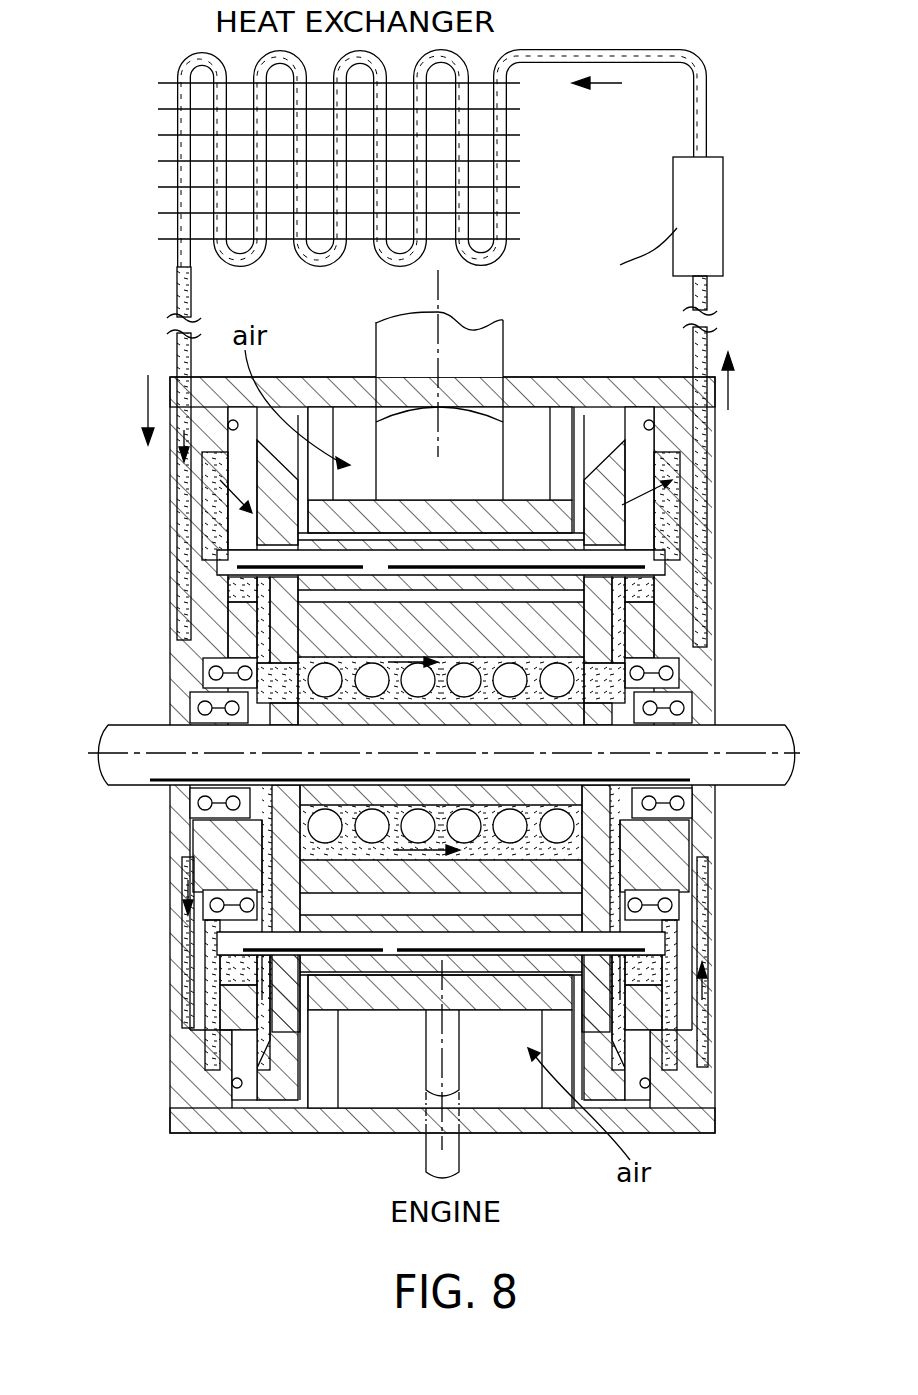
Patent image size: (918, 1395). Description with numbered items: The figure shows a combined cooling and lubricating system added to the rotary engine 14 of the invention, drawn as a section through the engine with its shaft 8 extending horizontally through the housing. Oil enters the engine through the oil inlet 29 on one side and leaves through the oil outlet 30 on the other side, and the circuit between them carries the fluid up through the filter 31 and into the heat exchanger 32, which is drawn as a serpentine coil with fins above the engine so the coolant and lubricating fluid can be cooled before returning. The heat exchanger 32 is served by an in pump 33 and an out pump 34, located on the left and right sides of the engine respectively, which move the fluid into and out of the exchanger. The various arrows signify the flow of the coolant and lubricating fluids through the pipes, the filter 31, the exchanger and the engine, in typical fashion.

The shaft 8 is at (740, 727).
The rotary engine 14 is at (126, 1165).
The oil inlet 29 is at (177, 270).
The oil outlet 30 is at (708, 298).
The filter 31 is at (723, 225).
The heat exchanger 32 is at (505, 150).
The in pump 33 is at (208, 600).
The out pump 34 is at (672, 640).